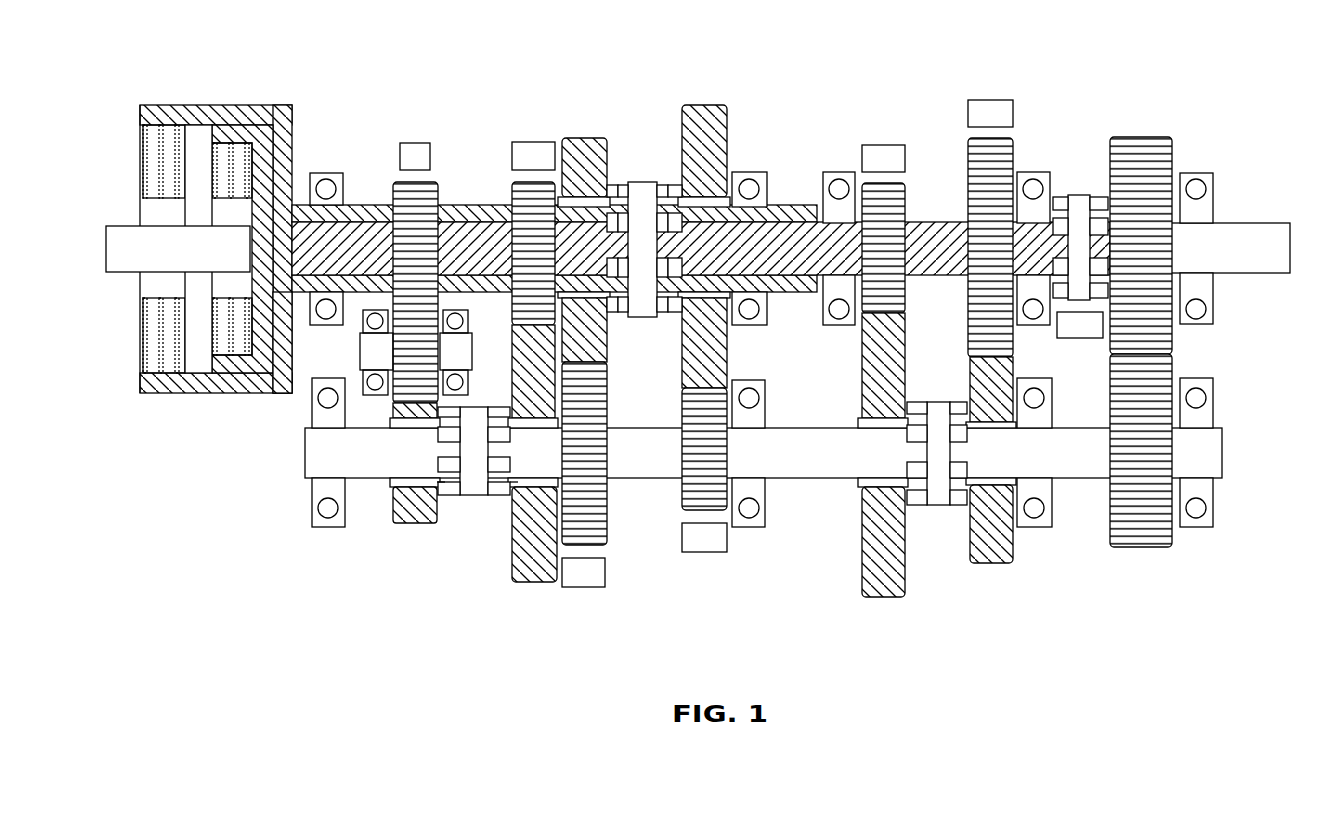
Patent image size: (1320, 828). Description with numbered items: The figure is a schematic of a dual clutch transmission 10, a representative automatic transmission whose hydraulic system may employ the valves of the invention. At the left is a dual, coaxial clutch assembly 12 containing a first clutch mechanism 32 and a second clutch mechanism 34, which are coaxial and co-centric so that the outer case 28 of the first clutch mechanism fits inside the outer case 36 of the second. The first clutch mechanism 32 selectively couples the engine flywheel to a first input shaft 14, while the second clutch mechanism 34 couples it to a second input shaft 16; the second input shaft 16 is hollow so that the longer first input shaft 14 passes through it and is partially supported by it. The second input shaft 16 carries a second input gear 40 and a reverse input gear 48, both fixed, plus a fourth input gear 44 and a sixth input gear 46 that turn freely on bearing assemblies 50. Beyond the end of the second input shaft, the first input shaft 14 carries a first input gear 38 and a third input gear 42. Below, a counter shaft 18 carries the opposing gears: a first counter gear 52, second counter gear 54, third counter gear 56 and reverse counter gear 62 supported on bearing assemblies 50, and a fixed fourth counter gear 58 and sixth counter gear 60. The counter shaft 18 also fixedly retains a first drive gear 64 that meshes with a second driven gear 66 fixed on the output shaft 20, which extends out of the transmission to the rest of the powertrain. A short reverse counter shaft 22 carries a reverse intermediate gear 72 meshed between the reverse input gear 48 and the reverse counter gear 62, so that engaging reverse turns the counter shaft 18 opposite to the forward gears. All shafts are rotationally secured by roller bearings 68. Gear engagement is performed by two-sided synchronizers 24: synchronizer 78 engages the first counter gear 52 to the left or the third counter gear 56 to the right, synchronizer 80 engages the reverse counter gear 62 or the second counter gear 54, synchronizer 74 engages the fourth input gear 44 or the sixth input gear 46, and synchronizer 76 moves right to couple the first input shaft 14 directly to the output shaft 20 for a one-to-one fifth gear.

The dual clutch transmission 10 is at (533, 103).
The dual, coaxial clutch assembly 12 is at (222, 78).
The first input shaft 14 is at (940, 232).
The second input shaft 16 is at (355, 200).
The counter shaft 18 is at (318, 458).
The output shaft 20 is at (1270, 238).
The reverse counter shaft 22 is at (360, 358).
The synchronizers 24 is at (658, 130).
The outer case of the first clutch mechanism 28 is at (262, 170).
The first clutch mechanism 32 is at (237, 155).
The second clutch mechanism 34 is at (165, 135).
The outer case of the second clutch mechanism 36 is at (292, 126).
The first input gear 38 is at (905, 197).
The second input gear 40 is at (512, 195).
The third input gear 42 is at (1005, 152).
The fourth input gear 44 is at (580, 140).
The sixth input gear 46 is at (724, 125).
The reverse input gear 48 is at (440, 200).
The bearing assemblies 50 is at (390, 482).
The first counter gear 52 is at (870, 577).
The second counter gear 54 is at (533, 573).
The third counter gear 56 is at (985, 550).
The fourth counter gear 58 is at (600, 528).
The sixth counter gear 60 is at (683, 497).
The reverse counter gear 62 is at (398, 513).
The first drive gear 64 is at (1118, 523).
The second driven gear 66 is at (1148, 142).
The roller bearings 68 is at (758, 190).
The reverse intermediate gear 72 is at (400, 350).
The synchronizer 74 is at (644, 200).
The synchronizer 76 is at (1080, 208).
The synchronizer 78 is at (938, 500).
The synchronizer 80 is at (475, 485).